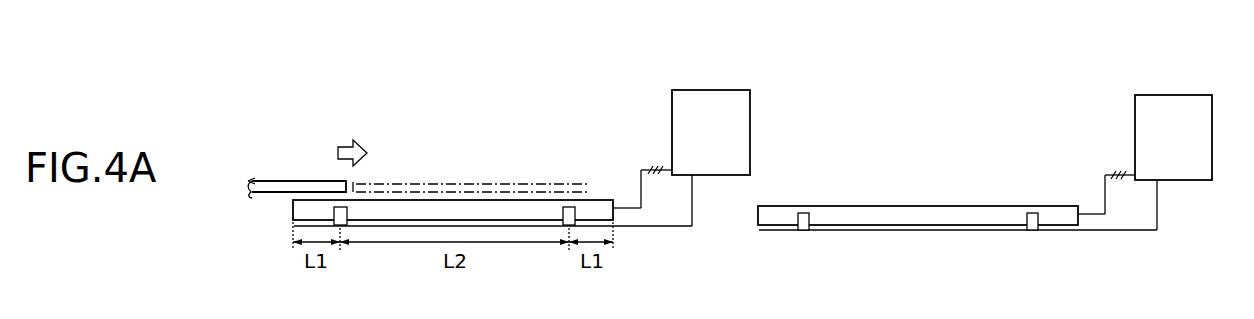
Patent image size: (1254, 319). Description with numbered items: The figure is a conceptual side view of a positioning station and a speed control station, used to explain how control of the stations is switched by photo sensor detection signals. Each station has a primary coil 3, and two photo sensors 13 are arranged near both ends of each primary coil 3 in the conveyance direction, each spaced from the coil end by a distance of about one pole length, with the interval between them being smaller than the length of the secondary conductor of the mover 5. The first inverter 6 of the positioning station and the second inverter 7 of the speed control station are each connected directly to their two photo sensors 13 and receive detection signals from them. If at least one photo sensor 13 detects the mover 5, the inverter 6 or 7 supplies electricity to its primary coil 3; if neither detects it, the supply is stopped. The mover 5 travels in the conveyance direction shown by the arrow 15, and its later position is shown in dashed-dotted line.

The primary coil 3 is at (600, 200).
The mover 5 is at (282, 181).
The first inverter 6 is at (708, 90).
The second inverter 7 is at (1170, 95).
The photo sensor 13 is at (341, 228).
The arrow 15 is at (349, 141).